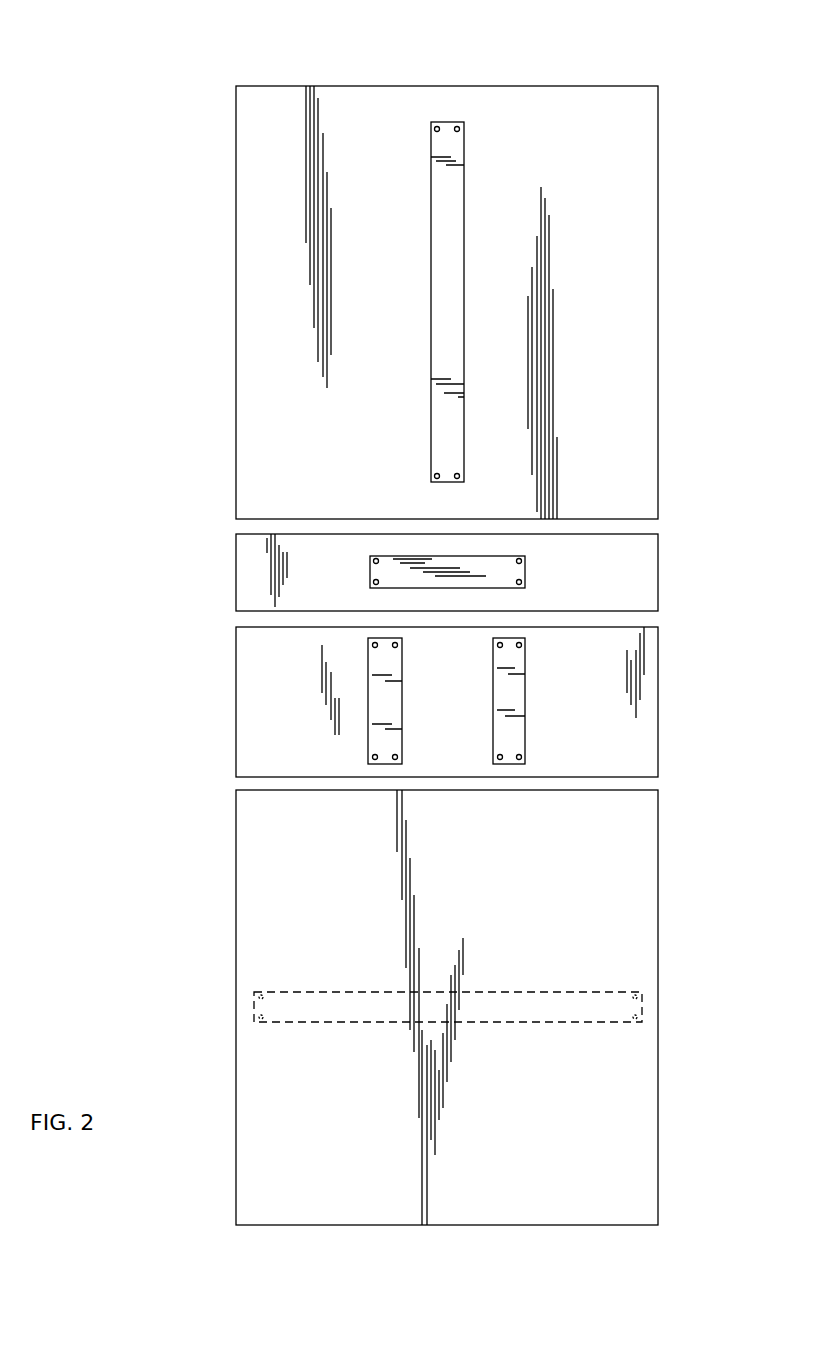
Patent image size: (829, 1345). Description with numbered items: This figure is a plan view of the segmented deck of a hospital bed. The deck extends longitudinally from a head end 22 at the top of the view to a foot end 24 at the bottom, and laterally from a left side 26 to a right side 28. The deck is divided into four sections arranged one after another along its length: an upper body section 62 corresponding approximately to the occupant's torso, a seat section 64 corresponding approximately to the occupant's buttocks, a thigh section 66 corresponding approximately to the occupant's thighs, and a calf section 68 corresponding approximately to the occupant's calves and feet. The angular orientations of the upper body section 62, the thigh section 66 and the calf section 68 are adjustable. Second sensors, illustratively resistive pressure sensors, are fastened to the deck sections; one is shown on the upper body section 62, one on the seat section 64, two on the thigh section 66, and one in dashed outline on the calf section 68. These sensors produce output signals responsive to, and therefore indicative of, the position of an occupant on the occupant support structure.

The head end 22 is at (353, 68).
The foot end 24 is at (529, 1234).
The left side 26 is at (740, 395).
The right side 28 is at (157, 396).
The upper body section 62 is at (637, 262).
The seat section 64 is at (646, 560).
The thigh section 66 is at (651, 708).
The calf section 68 is at (641, 909).